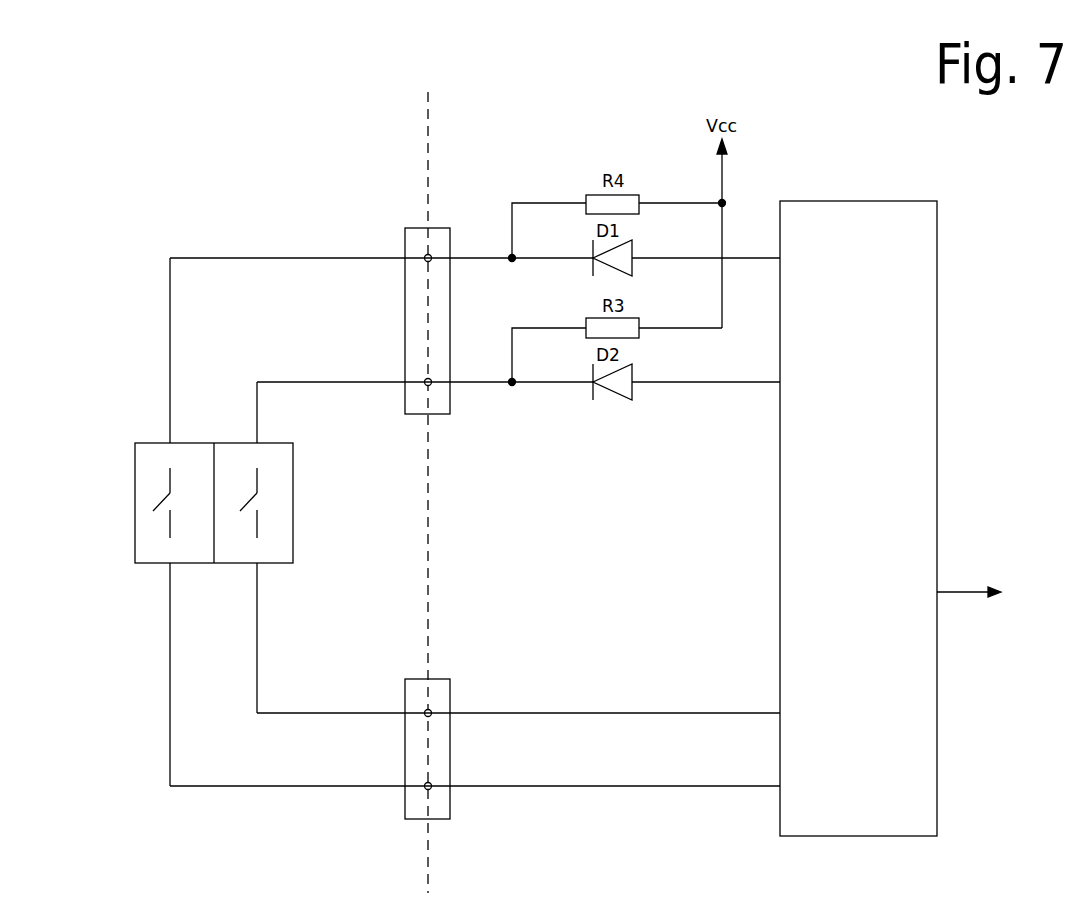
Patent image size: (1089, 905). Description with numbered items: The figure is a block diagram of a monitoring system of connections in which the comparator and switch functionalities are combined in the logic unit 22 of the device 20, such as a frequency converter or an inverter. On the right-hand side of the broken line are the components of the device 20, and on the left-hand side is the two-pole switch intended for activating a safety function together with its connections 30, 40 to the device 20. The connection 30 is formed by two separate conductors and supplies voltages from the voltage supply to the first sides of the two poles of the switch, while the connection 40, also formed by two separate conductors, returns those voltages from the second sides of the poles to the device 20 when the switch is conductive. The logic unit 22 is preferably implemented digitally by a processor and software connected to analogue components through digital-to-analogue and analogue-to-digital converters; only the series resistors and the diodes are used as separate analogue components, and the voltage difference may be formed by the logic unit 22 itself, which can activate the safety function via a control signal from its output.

The device 20 is at (467, 207).
The logic unit 22 is at (780, 592).
The connection 30 is at (330, 335).
The connection 40 is at (326, 757).